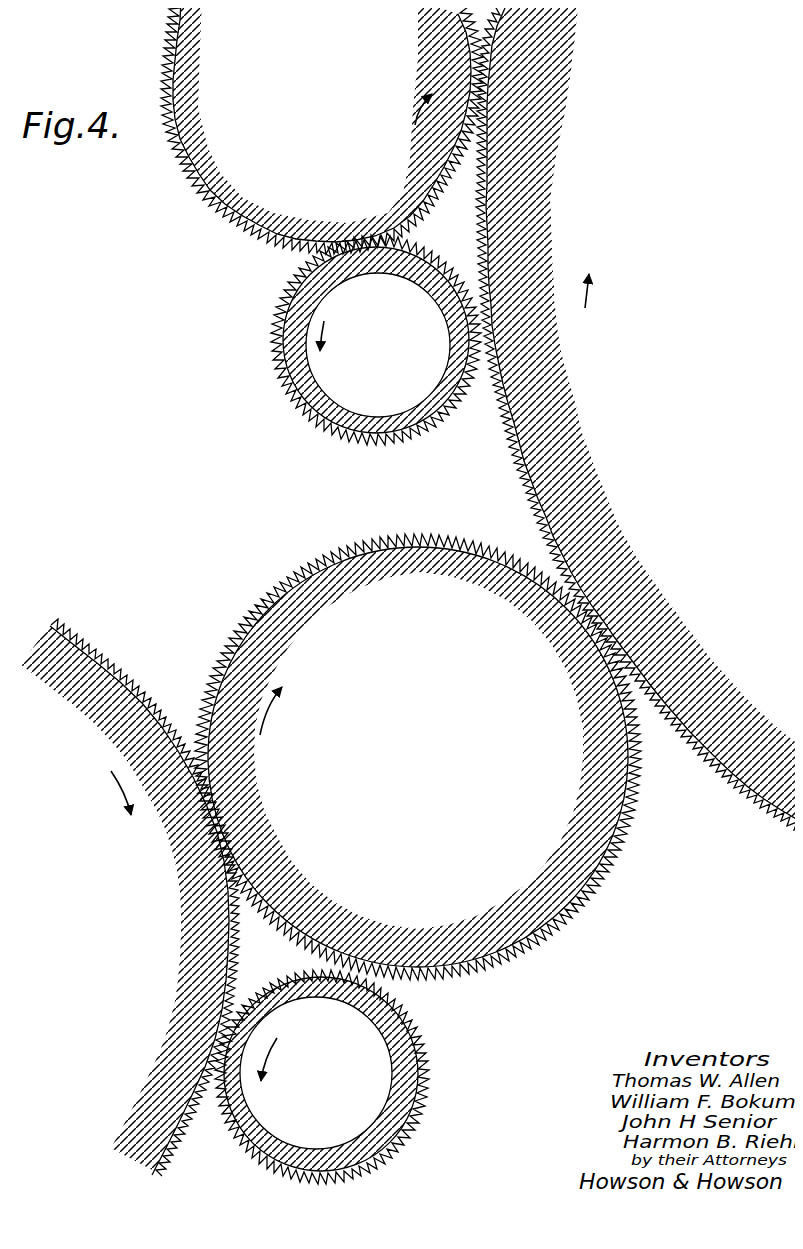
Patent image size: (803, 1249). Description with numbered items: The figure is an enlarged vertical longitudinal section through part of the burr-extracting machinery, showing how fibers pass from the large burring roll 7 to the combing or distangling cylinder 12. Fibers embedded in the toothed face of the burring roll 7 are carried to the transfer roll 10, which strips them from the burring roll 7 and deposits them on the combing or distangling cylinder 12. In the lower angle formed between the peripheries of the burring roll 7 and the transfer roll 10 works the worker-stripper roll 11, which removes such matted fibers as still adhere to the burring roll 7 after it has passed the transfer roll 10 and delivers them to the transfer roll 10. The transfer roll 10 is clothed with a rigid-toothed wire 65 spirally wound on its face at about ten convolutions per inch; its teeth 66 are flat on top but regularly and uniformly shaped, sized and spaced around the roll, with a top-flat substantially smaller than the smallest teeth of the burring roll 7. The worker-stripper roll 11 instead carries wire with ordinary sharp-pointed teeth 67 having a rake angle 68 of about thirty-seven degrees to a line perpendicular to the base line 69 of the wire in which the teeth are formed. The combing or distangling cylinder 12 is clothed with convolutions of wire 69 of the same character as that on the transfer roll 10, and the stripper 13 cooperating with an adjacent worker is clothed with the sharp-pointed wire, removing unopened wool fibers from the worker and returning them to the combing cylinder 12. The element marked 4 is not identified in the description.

The roller 4 is at (188, 166).
The burring roll 7 is at (131, 681).
The transfer roll 10 is at (334, 556).
The worker-stripper roll 11 is at (409, 1050).
The combing or distangling cylinder 12 is at (526, 428).
The stripper 13 is at (277, 349).
The wire 65 is at (218, 206).
The teeth 66 is at (248, 229).
The teeth 67 is at (465, 530).
The rake angle 68 is at (417, 1093).
The base line of the wire 69 is at (624, 855).